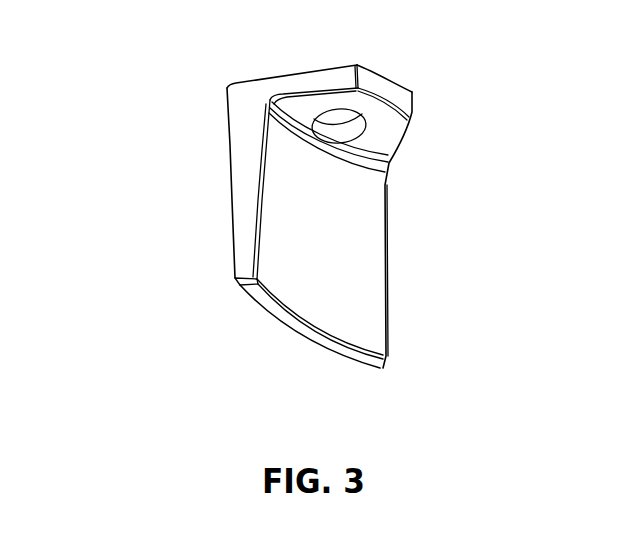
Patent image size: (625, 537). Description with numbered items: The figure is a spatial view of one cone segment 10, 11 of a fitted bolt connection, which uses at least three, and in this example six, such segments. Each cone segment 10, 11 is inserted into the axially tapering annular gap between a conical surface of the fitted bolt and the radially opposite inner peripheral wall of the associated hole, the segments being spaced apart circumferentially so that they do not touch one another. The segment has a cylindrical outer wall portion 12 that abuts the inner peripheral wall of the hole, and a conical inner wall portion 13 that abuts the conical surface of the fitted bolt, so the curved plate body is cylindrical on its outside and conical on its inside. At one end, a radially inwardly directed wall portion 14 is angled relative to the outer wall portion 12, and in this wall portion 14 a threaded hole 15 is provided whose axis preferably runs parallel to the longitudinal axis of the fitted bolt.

The cone segment 10 is at (312, 191).
The cone segment 11 is at (313, 191).
The cylindrical outer wall portion 12 is at (230, 165).
The conical inner wall portion 13 is at (355, 200).
The radially inwardly directed wall portion 14 is at (390, 128).
The threaded hole 15 is at (351, 128).